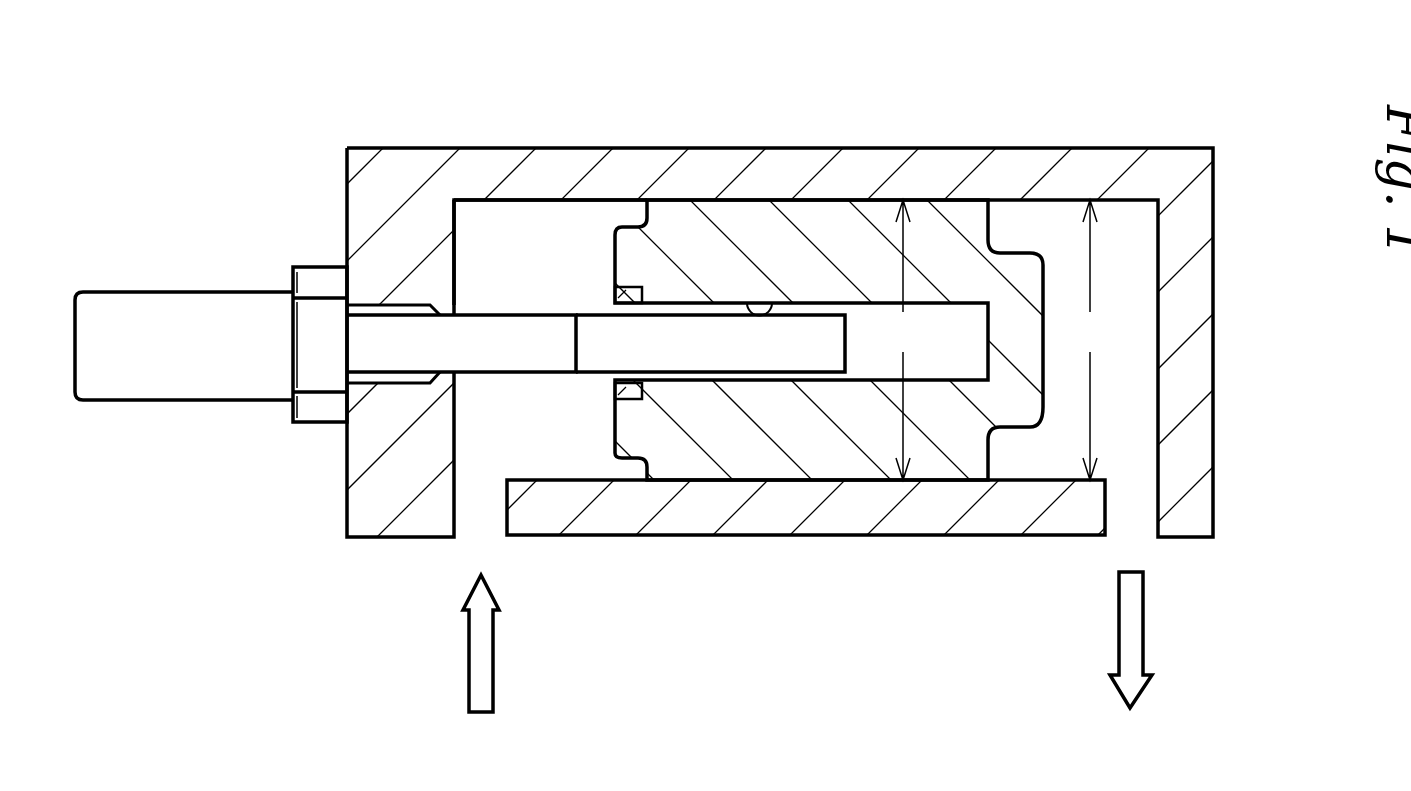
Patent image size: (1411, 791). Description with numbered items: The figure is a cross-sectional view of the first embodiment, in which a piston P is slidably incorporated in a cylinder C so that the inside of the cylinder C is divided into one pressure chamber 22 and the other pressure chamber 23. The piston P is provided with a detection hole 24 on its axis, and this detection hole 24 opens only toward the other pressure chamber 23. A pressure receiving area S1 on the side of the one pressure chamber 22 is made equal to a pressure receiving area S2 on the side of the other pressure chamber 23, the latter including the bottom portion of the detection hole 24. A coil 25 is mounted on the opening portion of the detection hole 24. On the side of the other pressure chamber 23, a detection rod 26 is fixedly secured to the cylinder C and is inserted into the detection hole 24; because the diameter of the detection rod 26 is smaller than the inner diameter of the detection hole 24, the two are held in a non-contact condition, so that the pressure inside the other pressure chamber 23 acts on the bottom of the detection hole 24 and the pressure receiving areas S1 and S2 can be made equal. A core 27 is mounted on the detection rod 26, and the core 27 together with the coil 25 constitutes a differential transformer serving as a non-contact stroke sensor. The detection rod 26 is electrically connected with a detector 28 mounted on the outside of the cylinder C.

The one pressure chamber 22 is at (1120, 212).
The other pressure chamber 23 is at (496, 215).
The detection hole 24 is at (745, 300).
The coil 25 is at (631, 392).
The detection rod 26 is at (553, 325).
The core 27 is at (825, 352).
The detector 28 is at (177, 300).
The piston P is at (830, 215).
The cylinder C is at (782, 525).
The pressure receiving area S1 is at (1089, 340).
The pressure receiving area S2 is at (901, 340).